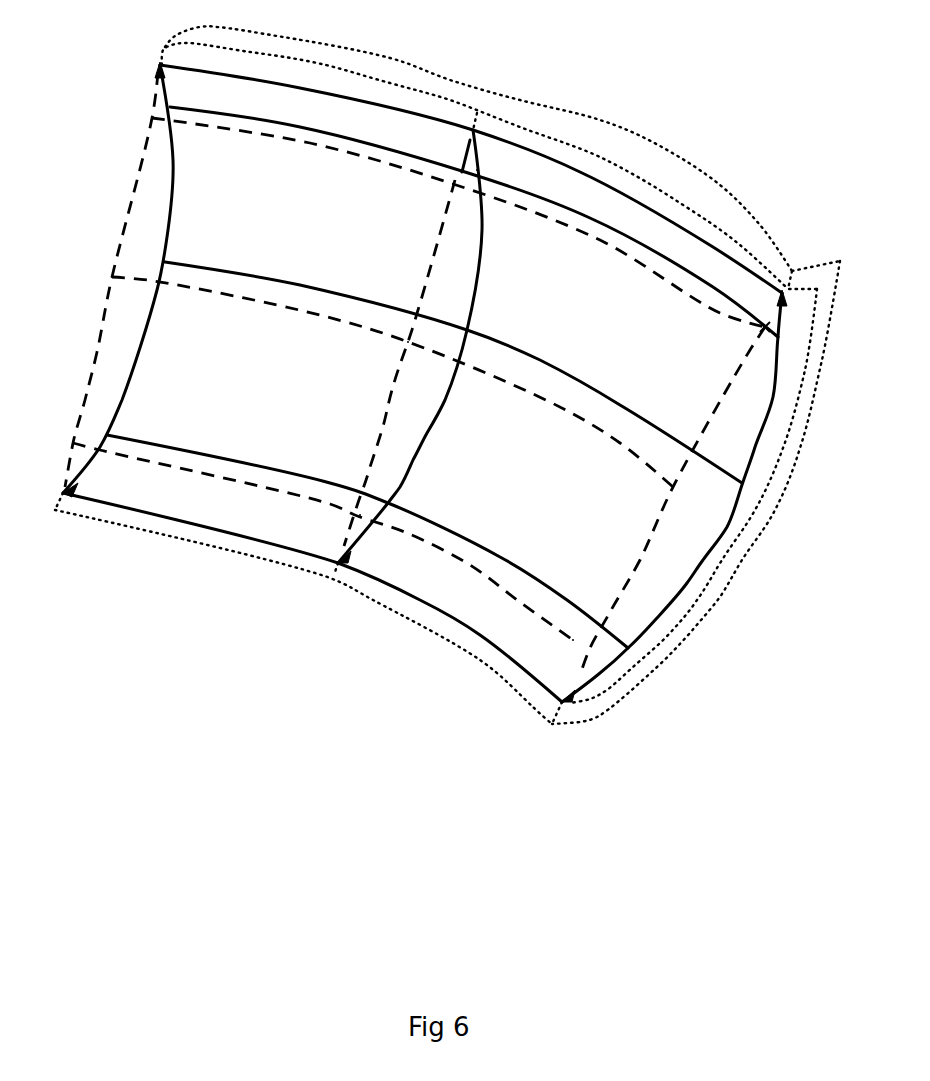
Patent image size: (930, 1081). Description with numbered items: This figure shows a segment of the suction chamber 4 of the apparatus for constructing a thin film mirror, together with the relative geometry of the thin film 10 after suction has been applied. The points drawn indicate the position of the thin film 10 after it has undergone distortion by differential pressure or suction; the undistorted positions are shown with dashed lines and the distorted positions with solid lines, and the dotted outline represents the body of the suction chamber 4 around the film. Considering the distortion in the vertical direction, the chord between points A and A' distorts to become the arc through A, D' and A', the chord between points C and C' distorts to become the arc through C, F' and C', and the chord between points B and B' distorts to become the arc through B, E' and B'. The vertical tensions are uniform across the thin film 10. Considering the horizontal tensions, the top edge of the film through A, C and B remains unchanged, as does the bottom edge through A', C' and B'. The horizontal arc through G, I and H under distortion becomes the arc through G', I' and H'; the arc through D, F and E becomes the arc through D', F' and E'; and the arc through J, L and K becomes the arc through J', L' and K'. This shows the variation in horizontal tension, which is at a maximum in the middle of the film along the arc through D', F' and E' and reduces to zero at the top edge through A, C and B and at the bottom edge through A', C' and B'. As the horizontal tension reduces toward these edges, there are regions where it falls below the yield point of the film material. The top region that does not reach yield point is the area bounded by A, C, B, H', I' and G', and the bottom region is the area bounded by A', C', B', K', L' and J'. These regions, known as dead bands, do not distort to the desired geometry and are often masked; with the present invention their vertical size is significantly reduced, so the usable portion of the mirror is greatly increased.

The suction chamber 4 is at (638, 138).
The thin film 10 is at (95, 352).
The point A is at (149, 55).
The point A' is at (47, 492).
The point B is at (793, 305).
The point B' is at (557, 685).
The point C is at (459, 140).
The point C' is at (355, 555).
The point D is at (99, 280).
The point D' is at (181, 250).
The point E is at (661, 492).
The point E' is at (738, 464).
The point F is at (395, 348).
The point F' is at (480, 316).
The point G is at (136, 120).
The point G' is at (185, 95).
The point H is at (736, 347).
The point H' is at (794, 337).
The point I is at (445, 195).
The point I' is at (488, 160).
The point J is at (63, 443).
The point J' is at (119, 421).
The point K is at (561, 650).
The point K' is at (630, 628).
The point L is at (343, 522).
The point L' is at (407, 495).